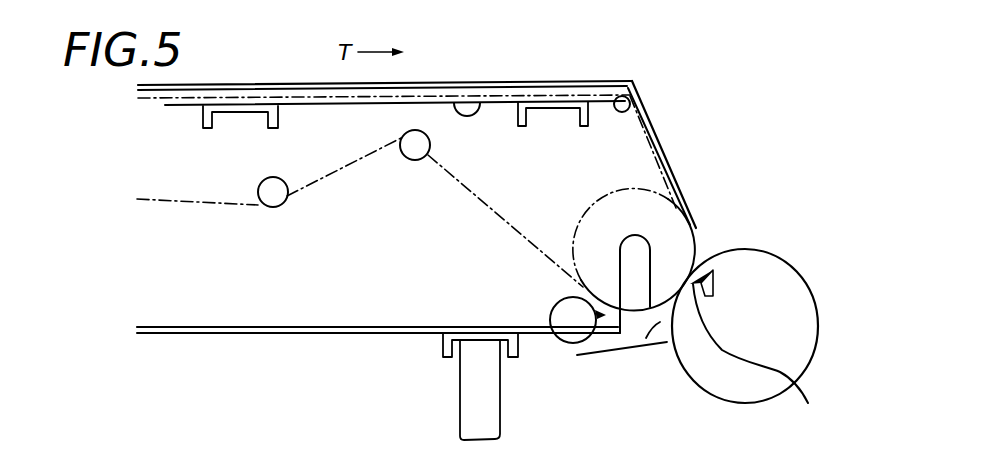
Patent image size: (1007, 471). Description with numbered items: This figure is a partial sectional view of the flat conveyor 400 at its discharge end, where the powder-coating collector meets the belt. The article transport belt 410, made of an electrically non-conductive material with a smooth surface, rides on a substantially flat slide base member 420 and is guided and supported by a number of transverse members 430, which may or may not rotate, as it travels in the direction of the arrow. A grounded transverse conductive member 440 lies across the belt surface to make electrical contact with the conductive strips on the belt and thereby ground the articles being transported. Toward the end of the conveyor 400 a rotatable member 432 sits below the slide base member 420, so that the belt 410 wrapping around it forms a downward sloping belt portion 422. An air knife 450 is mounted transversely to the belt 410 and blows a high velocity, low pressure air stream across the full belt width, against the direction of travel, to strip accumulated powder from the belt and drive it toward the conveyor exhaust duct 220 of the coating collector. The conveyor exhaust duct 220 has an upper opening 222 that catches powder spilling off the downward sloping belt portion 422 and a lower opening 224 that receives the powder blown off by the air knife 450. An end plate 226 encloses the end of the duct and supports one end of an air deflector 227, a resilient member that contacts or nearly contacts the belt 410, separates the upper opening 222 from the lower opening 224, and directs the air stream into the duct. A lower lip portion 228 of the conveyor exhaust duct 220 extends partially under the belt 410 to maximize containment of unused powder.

The flat conveyor 400 is at (128, 189).
The article transport belt 410 is at (193, 202).
The slide base member 420 is at (478, 110).
The downward sloping belt portion 422 is at (665, 150).
The transverse members 430 is at (278, 208).
The rotatable member 432 is at (645, 192).
The transverse conductive member 440 is at (415, 160).
The air knife 450 is at (562, 343).
The conveyor exhaust duct 220 is at (818, 328).
The upper opening 222 is at (703, 262).
The lower opening 224 is at (667, 343).
The end plate 226 is at (790, 302).
The air deflector 227 is at (762, 361).
The lower lip portion 228 is at (617, 350).